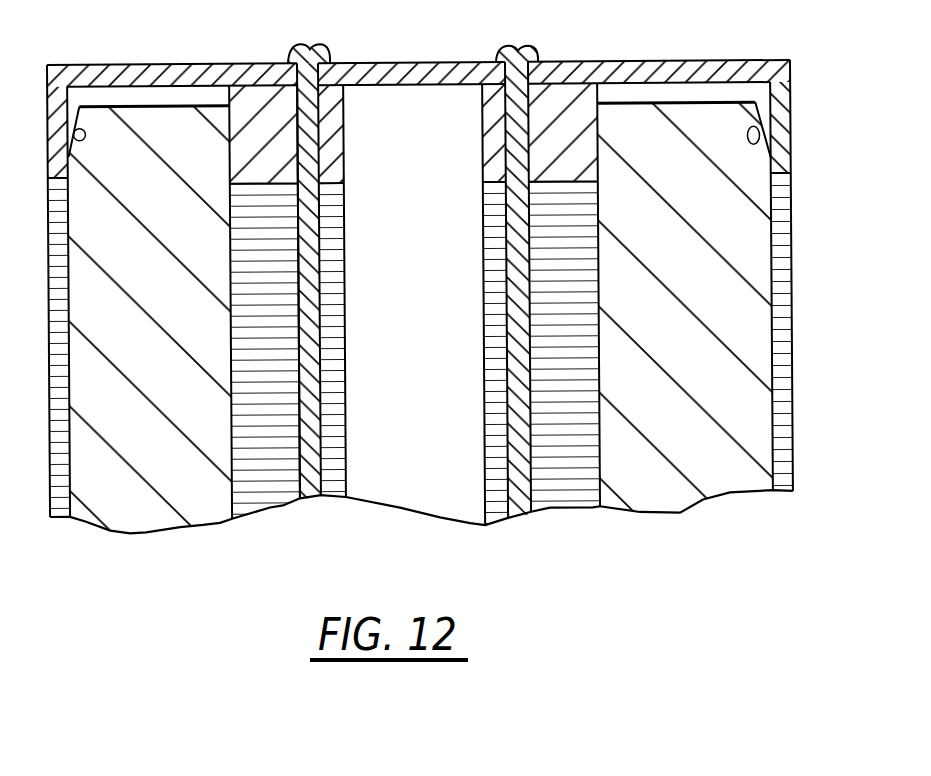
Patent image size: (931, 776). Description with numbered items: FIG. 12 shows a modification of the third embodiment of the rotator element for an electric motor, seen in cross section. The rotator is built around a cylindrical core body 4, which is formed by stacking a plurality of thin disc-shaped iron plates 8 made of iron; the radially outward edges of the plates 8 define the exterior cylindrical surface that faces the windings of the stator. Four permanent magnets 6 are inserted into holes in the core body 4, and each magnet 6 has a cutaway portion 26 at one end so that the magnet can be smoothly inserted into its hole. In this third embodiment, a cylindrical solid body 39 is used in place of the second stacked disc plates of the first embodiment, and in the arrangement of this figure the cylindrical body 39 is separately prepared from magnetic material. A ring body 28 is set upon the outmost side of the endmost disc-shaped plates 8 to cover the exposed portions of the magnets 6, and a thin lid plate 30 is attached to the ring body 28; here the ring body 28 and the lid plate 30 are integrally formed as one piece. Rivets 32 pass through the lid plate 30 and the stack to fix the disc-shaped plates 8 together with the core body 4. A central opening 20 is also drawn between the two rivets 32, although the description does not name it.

The cylindrical core body 4 is at (792, 452).
The permanent magnet 6 is at (88, 374).
The first disc-shaped iron plate 8 is at (264, 497).
The central opening 20 is at (395, 105).
The cutaway portion 26 is at (70, 136).
The ring body 28 is at (97, 67).
The lid plate 30 is at (143, 64).
The rivet 32 is at (317, 53).
The cylindrical solid body 39 is at (255, 104).